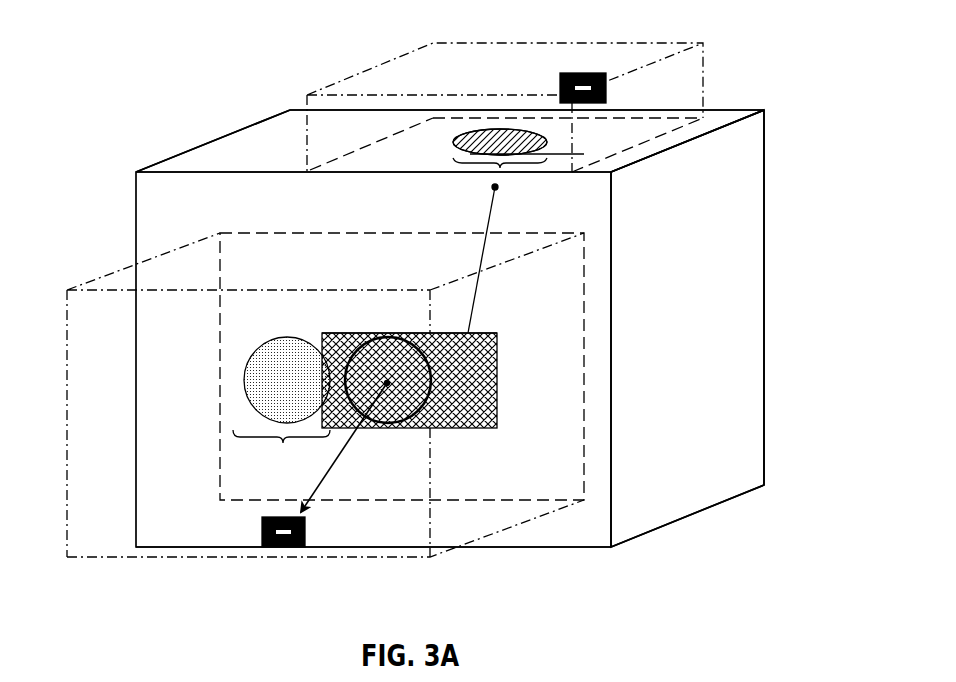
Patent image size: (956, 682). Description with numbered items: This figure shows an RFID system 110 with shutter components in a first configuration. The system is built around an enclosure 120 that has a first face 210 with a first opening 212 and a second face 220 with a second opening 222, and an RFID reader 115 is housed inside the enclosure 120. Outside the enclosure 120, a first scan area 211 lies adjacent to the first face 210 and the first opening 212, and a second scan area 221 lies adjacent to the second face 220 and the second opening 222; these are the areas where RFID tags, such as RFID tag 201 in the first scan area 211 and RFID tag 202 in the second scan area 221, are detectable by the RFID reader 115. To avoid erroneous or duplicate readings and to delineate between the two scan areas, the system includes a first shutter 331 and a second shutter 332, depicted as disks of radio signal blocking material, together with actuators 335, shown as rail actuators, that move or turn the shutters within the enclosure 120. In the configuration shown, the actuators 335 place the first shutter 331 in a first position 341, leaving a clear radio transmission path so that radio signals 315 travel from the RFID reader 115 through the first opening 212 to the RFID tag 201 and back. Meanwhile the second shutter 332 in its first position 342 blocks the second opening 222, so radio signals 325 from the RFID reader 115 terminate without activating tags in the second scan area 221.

The RFID system 110 is at (764, 378).
The RFID reader 115 is at (497, 413).
The enclosure 120 is at (739, 500).
The RFID tag 201 is at (268, 548).
The RFID tag 202 is at (588, 72).
The first face 210 is at (598, 530).
The first scan area 211 is at (388, 557).
The first opening 212 is at (387, 428).
The second face 220 is at (747, 110).
The second scan area 221 is at (325, 88).
The second opening 222 is at (470, 130).
The radio signals 315 is at (311, 497).
The radio signals 325 is at (486, 222).
The first shutter 331 is at (292, 380).
The second shutter 332 is at (494, 128).
The actuators 335 is at (493, 128).
The first position 341 is at (325, 395).
The first position 342 is at (500, 168).